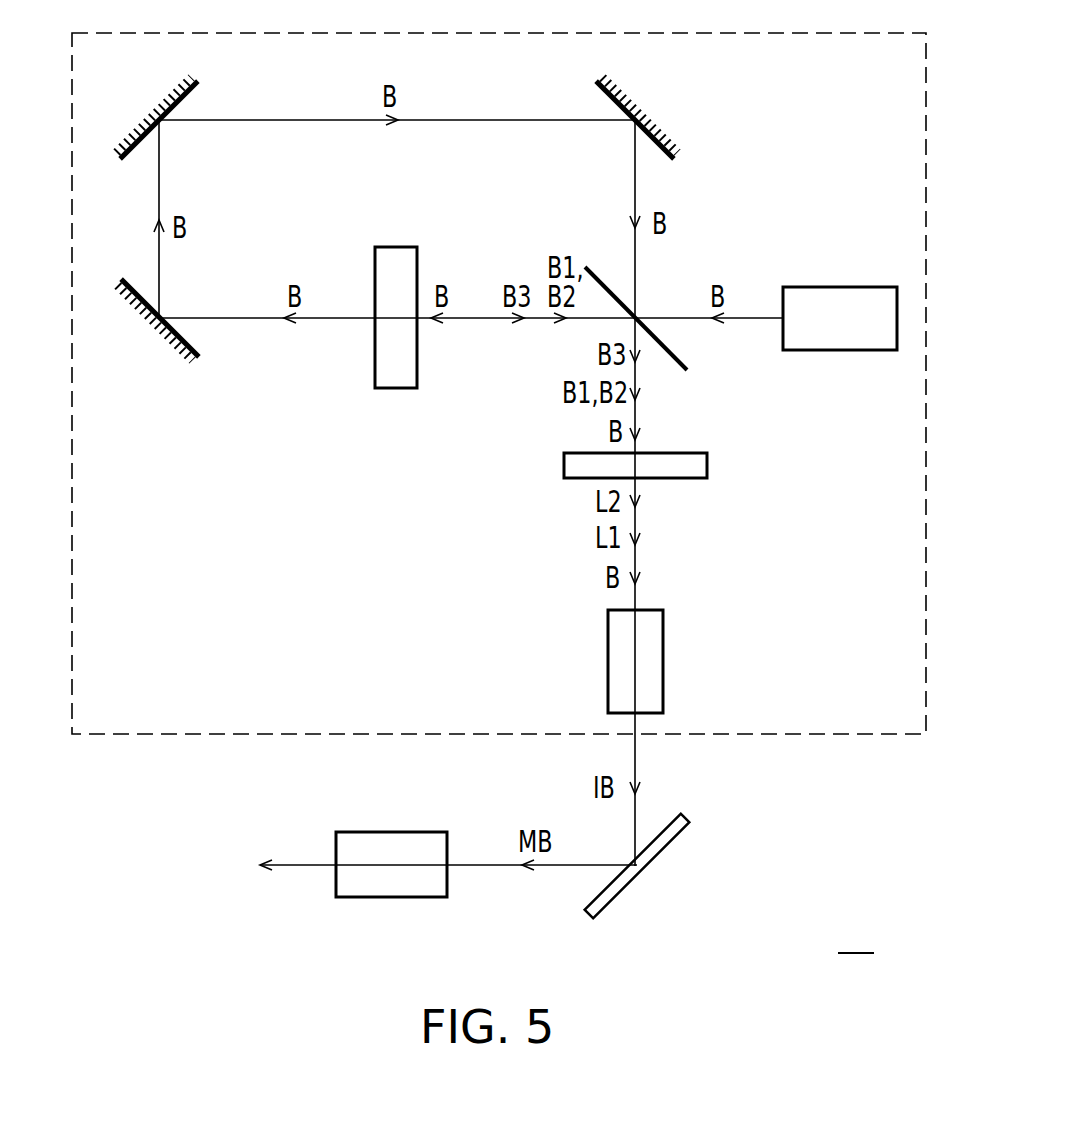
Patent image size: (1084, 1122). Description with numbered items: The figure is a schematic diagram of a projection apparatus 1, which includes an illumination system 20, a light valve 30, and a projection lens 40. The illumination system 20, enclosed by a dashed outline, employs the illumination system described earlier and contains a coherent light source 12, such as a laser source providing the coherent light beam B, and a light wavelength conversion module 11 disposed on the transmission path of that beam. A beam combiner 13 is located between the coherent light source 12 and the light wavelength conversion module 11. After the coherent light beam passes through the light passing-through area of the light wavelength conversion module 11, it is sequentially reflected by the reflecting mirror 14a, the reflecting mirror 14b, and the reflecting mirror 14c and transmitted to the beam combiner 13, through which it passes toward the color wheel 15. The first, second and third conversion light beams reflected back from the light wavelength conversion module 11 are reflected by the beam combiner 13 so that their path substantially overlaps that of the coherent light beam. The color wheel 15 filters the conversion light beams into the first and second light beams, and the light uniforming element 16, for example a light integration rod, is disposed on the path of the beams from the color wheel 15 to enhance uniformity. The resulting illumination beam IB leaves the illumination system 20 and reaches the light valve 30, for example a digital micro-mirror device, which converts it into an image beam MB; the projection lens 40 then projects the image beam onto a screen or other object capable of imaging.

The projection apparatus 1 is at (856, 933).
The light wavelength conversion module 11 is at (375, 298).
The coherent light source 12 is at (857, 287).
The beam combiner 13 is at (673, 348).
The reflecting mirror 14a is at (150, 323).
The reflecting mirror 14b is at (150, 113).
The reflecting mirror 14c is at (645, 113).
The color wheel 15 is at (668, 453).
The light uniforming element 16 is at (663, 660).
The illumination system 20 is at (860, 33).
The light valve 30 is at (620, 902).
The projection lens 40 is at (417, 832).